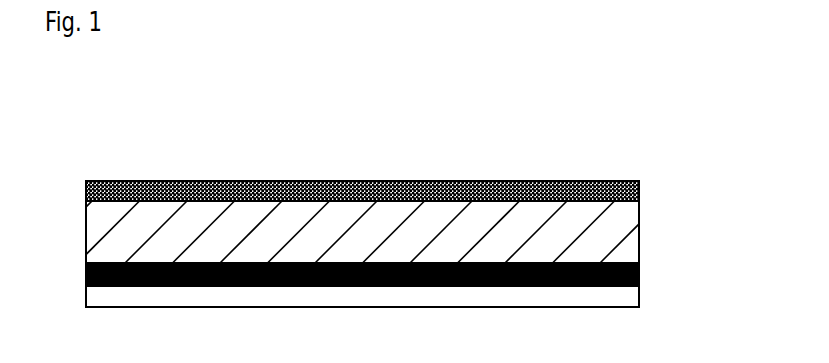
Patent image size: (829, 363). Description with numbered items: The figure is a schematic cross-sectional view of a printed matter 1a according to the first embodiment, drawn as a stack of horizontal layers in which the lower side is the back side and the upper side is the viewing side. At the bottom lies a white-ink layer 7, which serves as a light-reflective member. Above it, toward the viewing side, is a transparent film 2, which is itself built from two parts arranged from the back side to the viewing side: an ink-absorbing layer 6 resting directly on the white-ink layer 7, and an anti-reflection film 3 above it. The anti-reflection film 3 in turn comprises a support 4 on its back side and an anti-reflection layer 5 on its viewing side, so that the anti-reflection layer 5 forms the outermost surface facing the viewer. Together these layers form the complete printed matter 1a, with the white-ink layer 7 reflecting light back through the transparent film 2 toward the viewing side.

The printed matter 1a is at (86, 141).
The transparent film 2 is at (392, 233).
The anti-reflection film 3 is at (377, 219).
The support 4 is at (360, 232).
The anti-reflection layer 5 is at (639, 194).
The ink-absorbing layer 6 is at (405, 276).
The white-ink layer 7 is at (632, 293).